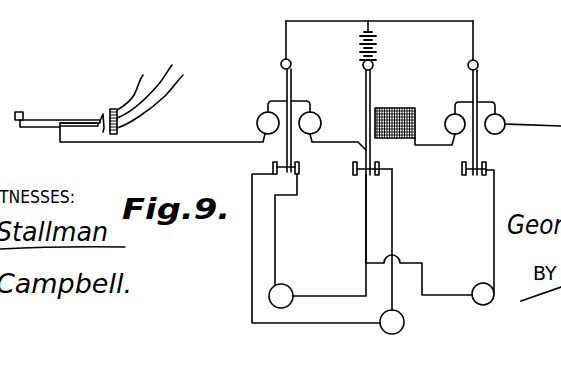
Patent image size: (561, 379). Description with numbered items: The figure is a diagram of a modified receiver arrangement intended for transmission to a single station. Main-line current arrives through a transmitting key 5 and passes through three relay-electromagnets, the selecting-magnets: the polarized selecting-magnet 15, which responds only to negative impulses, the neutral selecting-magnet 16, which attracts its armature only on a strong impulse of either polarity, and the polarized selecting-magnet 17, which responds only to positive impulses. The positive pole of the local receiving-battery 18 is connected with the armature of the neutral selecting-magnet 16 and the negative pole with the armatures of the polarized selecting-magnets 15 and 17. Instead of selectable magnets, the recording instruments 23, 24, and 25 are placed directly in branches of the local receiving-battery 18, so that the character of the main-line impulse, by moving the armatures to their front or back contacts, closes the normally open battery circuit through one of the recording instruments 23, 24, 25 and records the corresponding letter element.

The key lever 5 is at (99, 99).
The polarized selecting-magnet 15 is at (279, 116).
The neutral selecting-magnet 16 is at (384, 166).
The polarized selecting-magnet 17 is at (485, 117).
The local receiving-battery 18 is at (382, 51).
The recording instrument 23 is at (476, 286).
The recording instrument 24 is at (404, 322).
The recording instrument 25 is at (287, 287).